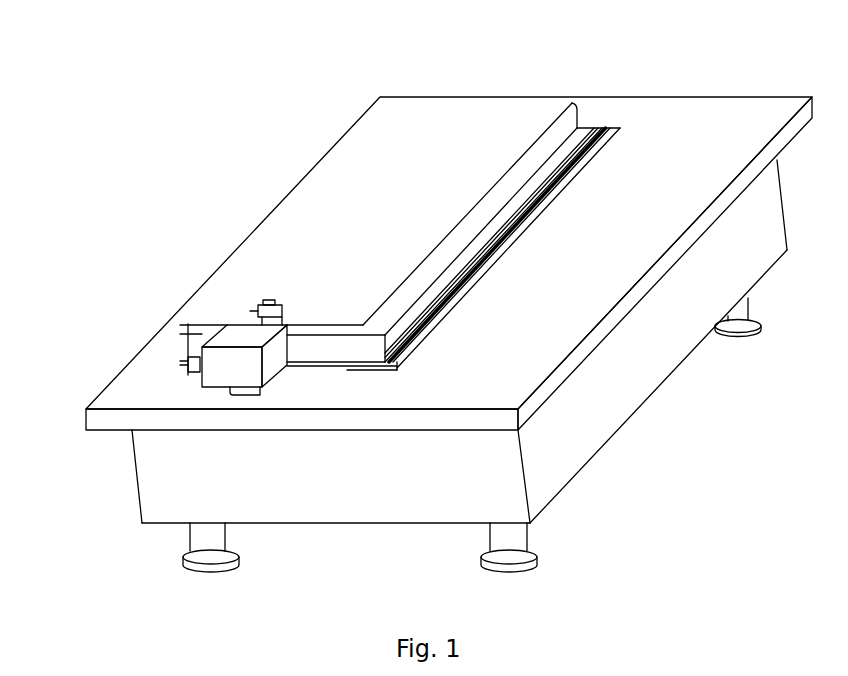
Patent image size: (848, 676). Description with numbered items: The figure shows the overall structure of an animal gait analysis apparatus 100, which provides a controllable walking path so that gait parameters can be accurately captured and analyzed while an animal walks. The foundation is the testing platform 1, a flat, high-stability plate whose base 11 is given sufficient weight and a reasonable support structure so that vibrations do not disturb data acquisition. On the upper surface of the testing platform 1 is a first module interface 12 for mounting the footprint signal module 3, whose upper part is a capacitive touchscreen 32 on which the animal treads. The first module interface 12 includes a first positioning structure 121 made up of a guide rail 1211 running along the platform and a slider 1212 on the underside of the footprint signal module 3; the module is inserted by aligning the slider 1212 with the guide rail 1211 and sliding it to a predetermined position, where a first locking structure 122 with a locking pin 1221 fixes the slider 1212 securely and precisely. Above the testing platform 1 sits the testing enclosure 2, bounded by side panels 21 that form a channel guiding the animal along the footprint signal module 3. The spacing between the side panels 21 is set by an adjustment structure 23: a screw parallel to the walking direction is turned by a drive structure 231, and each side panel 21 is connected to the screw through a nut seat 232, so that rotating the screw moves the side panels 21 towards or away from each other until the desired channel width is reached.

The animal gait analysis apparatus 100 is at (60, 50).
The testing platform 1 is at (318, 212).
The base 11 is at (162, 495).
The first module interface 12 is at (292, 371).
The first positioning structure 121 is at (303, 371).
The guide rail 1211 is at (320, 371).
The slider 1212 is at (197, 360).
The first locking structure 122 is at (343, 371).
The locking pin 1221 is at (341, 366).
The testing enclosure 2 is at (176, 307).
The side panel 21 is at (185, 344).
The adjustment structure 23 is at (178, 278).
The drive structure 231 is at (242, 332).
The nut seat 232 is at (270, 302).
The footprint signal module 3 is at (558, 191).
The capacitive touchscreen 32 is at (606, 132).